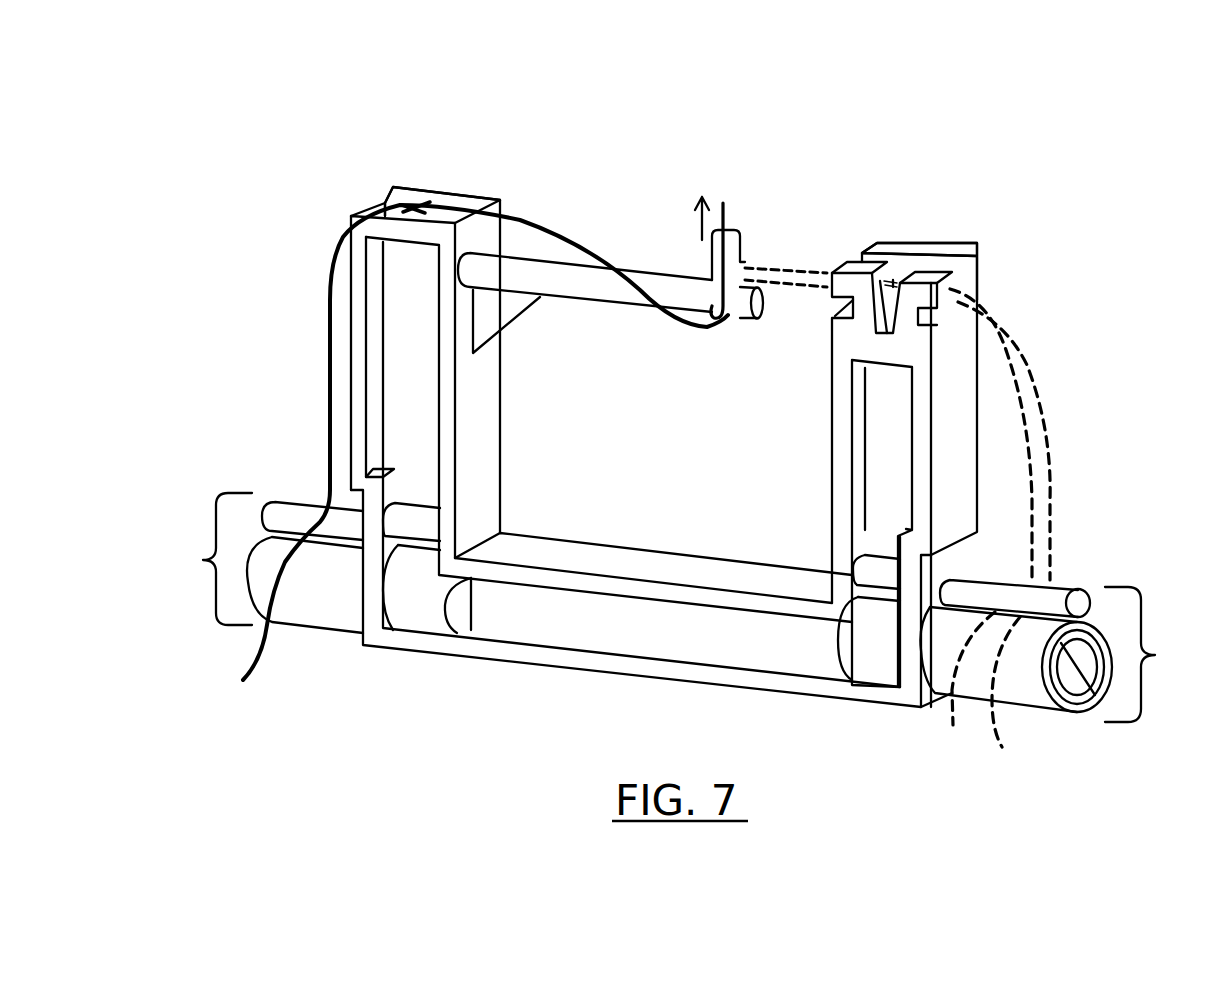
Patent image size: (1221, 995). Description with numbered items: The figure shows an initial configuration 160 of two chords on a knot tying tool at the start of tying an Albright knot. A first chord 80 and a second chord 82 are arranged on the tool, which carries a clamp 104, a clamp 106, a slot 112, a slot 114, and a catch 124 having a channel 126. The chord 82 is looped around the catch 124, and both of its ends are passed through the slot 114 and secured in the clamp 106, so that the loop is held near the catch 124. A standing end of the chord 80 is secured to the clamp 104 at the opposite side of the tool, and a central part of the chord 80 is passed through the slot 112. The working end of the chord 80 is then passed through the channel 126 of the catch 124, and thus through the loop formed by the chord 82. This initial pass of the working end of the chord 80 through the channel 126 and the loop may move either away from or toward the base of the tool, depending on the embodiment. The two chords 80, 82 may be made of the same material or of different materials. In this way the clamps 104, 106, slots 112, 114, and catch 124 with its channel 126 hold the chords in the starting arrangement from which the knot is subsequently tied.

The initial configuration 160 is at (589, 61).
The slot 112 is at (382, 200).
The slot 114 is at (985, 256).
The chord 80 is at (327, 333).
The chord 82 is at (1046, 440).
The catch 124 is at (742, 248).
The channel 126 is at (727, 317).
The clamp 104 is at (526, 586).
The clamp 106 is at (1062, 651).